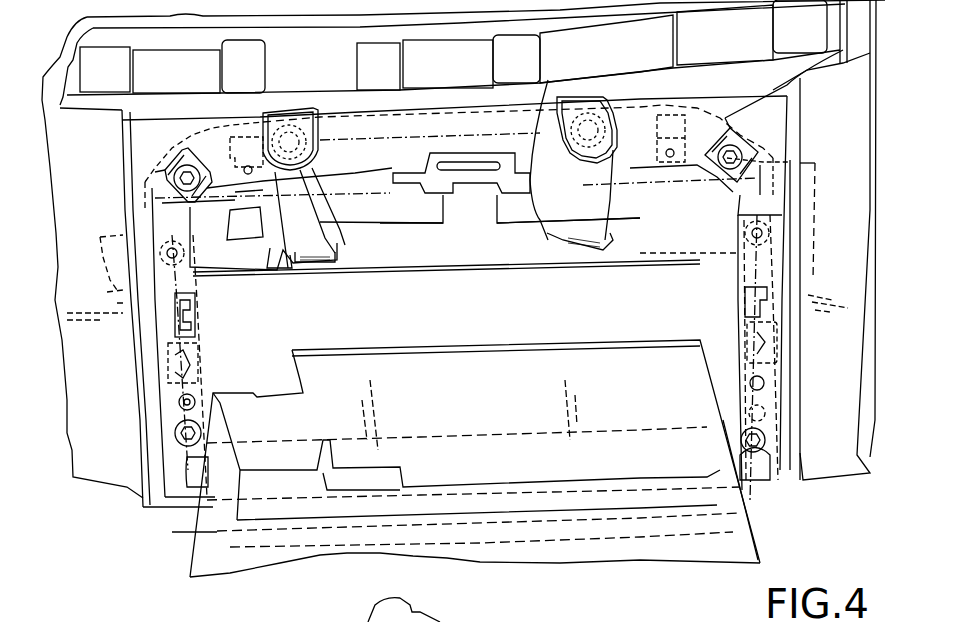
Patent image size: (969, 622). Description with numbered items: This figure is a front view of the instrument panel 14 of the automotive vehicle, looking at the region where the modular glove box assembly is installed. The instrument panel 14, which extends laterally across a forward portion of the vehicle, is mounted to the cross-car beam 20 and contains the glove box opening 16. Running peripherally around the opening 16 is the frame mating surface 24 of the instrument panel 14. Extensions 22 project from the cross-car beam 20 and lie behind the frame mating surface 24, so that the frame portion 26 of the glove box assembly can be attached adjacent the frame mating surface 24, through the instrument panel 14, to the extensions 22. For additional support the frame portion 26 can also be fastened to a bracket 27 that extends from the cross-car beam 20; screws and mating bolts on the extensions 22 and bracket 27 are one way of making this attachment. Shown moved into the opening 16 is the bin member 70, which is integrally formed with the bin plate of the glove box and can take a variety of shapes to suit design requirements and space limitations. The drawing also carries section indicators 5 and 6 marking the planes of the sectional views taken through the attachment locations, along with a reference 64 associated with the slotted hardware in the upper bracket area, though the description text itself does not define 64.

The instrument panel 14 is at (80, 153).
The opening 16 is at (697, 293).
The cross-car beam 20 is at (382, 243).
The extensions 22 is at (330, 230).
The frame mating surface 24 is at (770, 117).
The frame portion 26 is at (843, 50).
The bracket 27 is at (813, 207).
The slotted bracket 64 is at (458, 165).
The bin member 70 is at (218, 513).
The section line 5- 5 is at (288, 275).
The section line 6- 6 is at (590, 193).